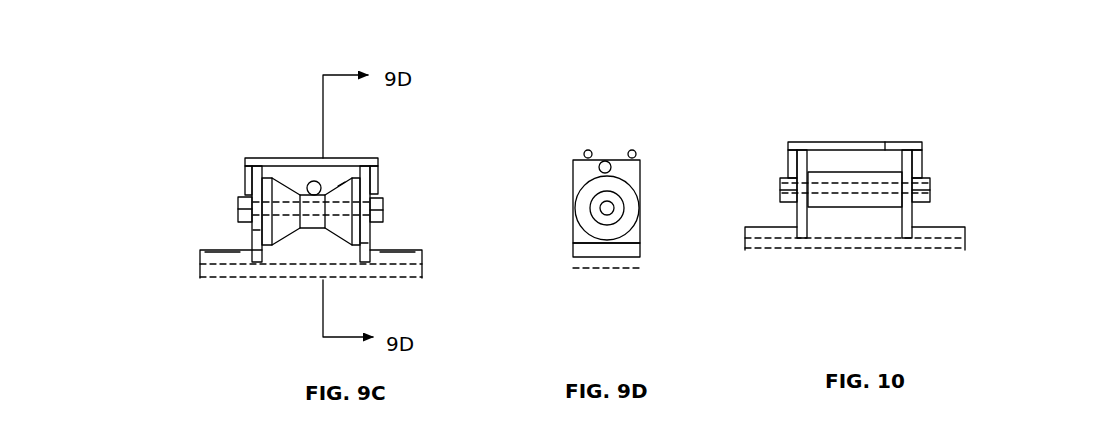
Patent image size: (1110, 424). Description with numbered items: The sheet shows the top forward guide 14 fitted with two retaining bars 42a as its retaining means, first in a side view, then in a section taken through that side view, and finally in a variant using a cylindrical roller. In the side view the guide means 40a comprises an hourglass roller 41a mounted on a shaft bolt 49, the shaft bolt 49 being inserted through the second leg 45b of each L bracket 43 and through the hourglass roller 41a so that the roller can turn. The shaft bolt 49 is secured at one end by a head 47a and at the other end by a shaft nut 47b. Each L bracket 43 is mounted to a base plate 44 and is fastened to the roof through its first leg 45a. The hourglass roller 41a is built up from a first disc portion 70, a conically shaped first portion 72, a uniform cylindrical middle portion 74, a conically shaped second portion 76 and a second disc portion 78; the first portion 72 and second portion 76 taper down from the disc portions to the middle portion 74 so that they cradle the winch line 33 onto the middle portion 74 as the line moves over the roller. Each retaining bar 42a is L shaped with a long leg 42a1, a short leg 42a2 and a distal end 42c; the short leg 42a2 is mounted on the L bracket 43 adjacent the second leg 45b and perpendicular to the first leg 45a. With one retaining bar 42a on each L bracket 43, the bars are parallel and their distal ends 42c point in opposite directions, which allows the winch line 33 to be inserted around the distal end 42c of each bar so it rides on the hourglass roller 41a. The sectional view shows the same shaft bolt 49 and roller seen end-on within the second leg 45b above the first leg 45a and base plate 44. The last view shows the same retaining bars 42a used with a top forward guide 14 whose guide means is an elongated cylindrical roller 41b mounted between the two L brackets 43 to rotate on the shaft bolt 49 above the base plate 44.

In FIG. 9C, the top forward guide 14 is at (146, 104).
In FIG. 10, the top forward guide 14 is at (786, 121).
In FIG. 9C, the winch line 33 is at (314, 179).
In FIG. 9D, the winch line 33 is at (605, 167).
In FIG. 9C, the guide means 40a is at (300, 165).
In FIG. 9D, the guide means 40a is at (647, 260).
In FIG. 9C, the hourglass roller 41a is at (300, 193).
In FIG. 9D, the hourglass roller 41a is at (640, 231).
In FIG. 10, the cylindrical roller 41b is at (839, 210).
In FIG. 9C, the retaining bar 42a is at (203, 84).
In FIG. 9D, the retaining bar 42a is at (586, 148).
In FIG. 10, the retaining bar 42a is at (863, 139).
In FIG. 9C, the long leg 42a1 is at (254, 158).
In FIG. 10, the long leg 42a1 is at (823, 147).
In FIG. 9C, the short leg 42a2 is at (246, 178).
In FIG. 10, the short leg 42a2 is at (790, 168).
In FIG. 9C, the distal end 42c is at (350, 158).
In FIG. 9C, the L bracket 43 is at (120, 185).
In FIG. 9D, the L bracket 43 is at (507, 178).
In FIG. 9C, the base plate 44 is at (234, 276).
In FIG. 9D, the base plate 44 is at (594, 271).
In FIG. 10, the base plate 44 is at (881, 250).
In FIG. 9C, the first leg 45a is at (223, 254).
In FIG. 9D, the first leg 45a is at (571, 248).
In FIG. 9C, the second leg 45b is at (257, 233).
In FIG. 9D, the second leg 45b is at (573, 187).
In FIG. 9C, the head 47a is at (412, 193).
In FIG. 10, the head 47a is at (921, 190).
In FIG. 9C, the shaft nut 47b is at (235, 199).
In FIG. 10, the shaft nut 47b is at (788, 190).
In FIG. 9C, the shaft bolt 49 is at (291, 199).
In FIG. 9D, the shaft bolt 49 is at (607, 208).
In FIG. 10, the shaft bolt 49 is at (874, 197).
In FIG. 9C, the first disc portion 70 is at (355, 189).
In FIG. 9C, the first portion 72 is at (336, 190).
In FIG. 9C, the middle portion 74 is at (312, 222).
In FIG. 9C, the second portion 76 is at (288, 222).
In FIG. 9C, the second disc portion 78 is at (267, 225).